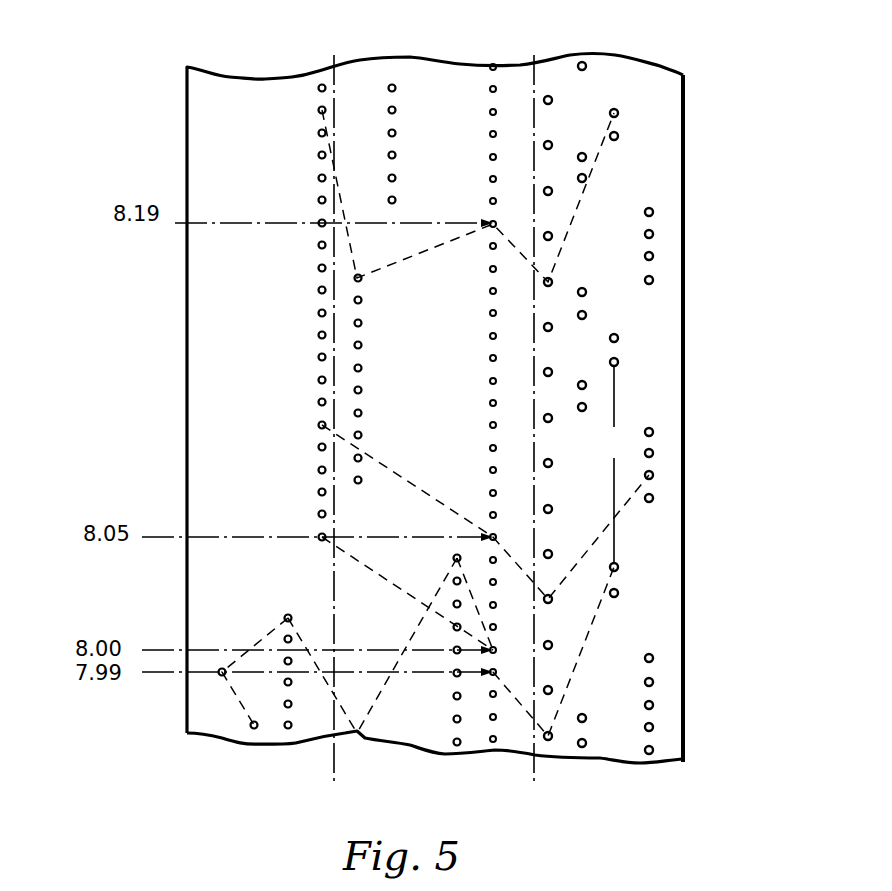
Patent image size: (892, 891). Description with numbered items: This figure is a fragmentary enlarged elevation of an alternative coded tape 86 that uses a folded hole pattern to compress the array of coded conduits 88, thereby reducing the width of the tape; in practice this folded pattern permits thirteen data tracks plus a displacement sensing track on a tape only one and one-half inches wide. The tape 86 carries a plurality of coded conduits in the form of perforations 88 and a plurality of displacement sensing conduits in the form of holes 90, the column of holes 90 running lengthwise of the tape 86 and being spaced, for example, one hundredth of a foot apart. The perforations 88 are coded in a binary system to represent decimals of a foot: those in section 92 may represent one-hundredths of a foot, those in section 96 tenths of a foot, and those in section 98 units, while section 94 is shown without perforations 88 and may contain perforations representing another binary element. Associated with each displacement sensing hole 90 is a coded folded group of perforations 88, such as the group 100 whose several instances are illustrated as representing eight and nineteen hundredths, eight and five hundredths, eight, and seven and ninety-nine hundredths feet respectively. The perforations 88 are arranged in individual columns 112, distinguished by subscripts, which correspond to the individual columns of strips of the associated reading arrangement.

The tape 86 is at (683, 242).
The coded conduits (perforations) 88 is at (392, 133).
The displacement sensing conduits (holes) 90 is at (493, 112).
The section 92 is at (680, 55).
The section 94 is at (535, 55).
The section 96 is at (483, 55).
The section 98 is at (327, 55).
The coded folded group of perforations 100 is at (400, 261).
The columns of perforations 112 is at (392, 200).